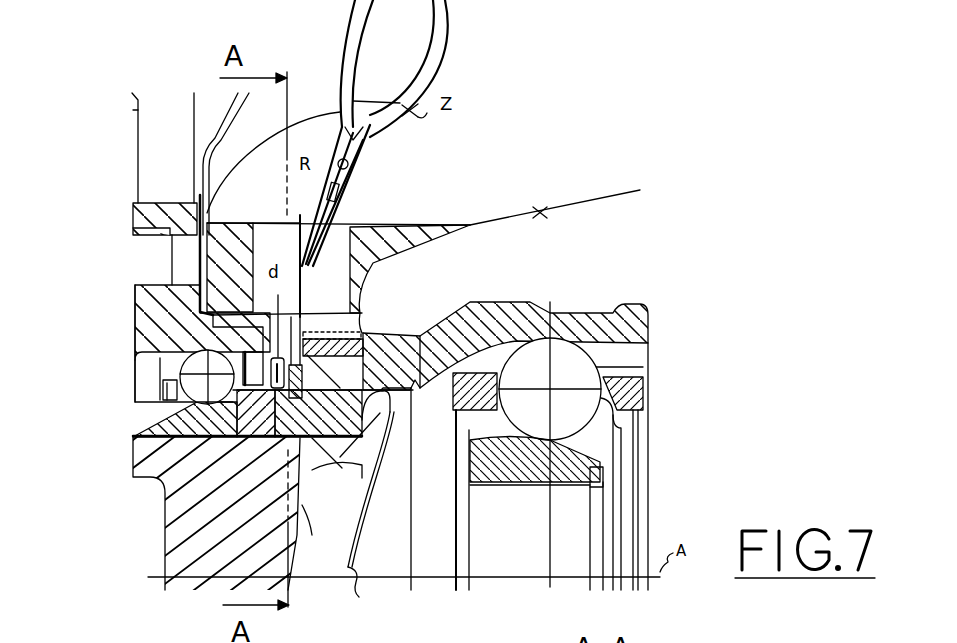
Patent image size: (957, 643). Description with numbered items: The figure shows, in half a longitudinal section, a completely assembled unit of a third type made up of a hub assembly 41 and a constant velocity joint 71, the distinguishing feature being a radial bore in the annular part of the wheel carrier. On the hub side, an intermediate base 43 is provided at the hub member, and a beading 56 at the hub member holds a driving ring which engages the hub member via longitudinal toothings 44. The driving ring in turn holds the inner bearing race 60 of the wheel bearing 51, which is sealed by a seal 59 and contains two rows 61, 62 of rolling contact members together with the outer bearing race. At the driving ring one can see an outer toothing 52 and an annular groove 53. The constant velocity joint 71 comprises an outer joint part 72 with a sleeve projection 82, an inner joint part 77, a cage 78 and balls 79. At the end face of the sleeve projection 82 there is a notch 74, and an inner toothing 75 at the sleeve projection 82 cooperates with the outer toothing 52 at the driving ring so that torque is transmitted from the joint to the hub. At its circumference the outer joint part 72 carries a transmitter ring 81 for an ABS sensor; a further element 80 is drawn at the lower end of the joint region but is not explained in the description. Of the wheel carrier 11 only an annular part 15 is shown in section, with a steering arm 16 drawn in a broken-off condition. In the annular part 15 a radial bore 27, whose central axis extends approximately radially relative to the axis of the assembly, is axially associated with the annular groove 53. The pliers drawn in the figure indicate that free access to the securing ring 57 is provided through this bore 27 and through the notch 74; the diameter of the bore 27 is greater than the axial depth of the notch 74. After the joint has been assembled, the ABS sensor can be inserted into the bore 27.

The wheel carrier 11 is at (431, 261).
The annular part 15 is at (253, 262).
The steering arm 16 is at (541, 213).
The radial bore 27 is at (285, 215).
The hub assembly 41 is at (122, 478).
The intermediate base 43 is at (165, 529).
The longitudinal toothings 44 is at (312, 535).
The wheel bearing 51 is at (84, 355).
The outer toothing 52 is at (303, 332).
The annular groove 53 is at (338, 438).
The beading 56 is at (359, 505).
The securing ring 57 is at (306, 307).
The seal 59 is at (170, 323).
The inner bearing race 60 is at (148, 443).
The row of rolling contact members 61 is at (176, 350).
The row of rolling contact members 62 is at (137, 392).
The constant velocity joint 71 is at (713, 348).
The outer joint part 72 is at (650, 318).
The notch 74 is at (290, 313).
The inner toothing 75 is at (418, 333).
The inner joint part 77 is at (603, 460).
The cage 78 is at (633, 403).
The balls 79 is at (636, 362).
The boot end 80 is at (374, 594).
The transmitter ring 81 is at (368, 340).
The sleeve projection 82 is at (361, 332).